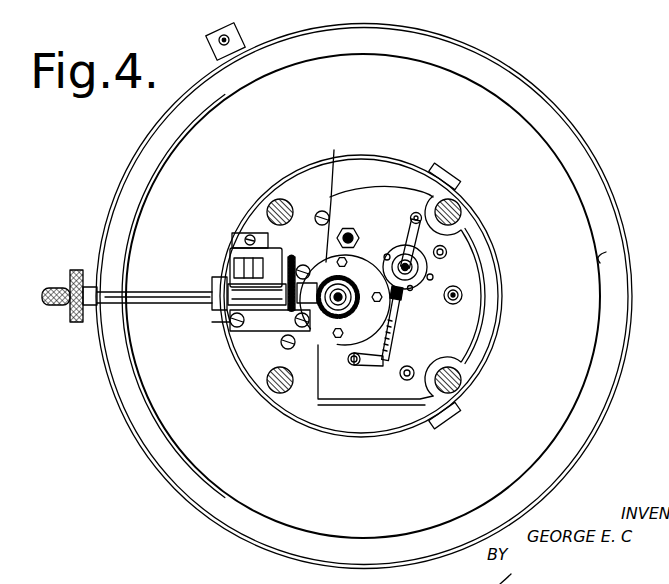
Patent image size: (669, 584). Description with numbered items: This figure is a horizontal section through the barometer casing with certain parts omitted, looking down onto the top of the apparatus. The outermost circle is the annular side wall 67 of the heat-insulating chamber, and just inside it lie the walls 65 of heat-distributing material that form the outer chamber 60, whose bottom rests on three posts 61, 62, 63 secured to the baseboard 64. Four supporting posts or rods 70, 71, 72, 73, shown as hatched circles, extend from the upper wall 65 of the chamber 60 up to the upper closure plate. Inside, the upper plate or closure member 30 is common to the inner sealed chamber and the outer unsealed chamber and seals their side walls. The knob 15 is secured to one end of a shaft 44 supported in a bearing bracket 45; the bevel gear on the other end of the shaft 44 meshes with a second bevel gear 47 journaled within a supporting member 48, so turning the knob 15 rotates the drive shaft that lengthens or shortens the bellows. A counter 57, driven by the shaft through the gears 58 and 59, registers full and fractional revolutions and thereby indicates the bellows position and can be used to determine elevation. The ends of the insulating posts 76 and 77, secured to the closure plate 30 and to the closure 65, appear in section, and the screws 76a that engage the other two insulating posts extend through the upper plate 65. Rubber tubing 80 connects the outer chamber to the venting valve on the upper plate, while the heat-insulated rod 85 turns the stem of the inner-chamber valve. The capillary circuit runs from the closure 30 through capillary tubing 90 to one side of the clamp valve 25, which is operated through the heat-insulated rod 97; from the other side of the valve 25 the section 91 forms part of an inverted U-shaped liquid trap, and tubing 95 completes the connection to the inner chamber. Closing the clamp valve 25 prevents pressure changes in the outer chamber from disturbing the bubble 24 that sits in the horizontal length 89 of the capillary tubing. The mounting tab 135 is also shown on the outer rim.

The knob 15 is at (48, 306).
The bubble 24 is at (396, 341).
The clamp valve 25 is at (440, 259).
The upper plate or closure member 30 is at (344, 197).
The shaft 44 is at (164, 304).
The bearing bracket 45 is at (225, 322).
The bevel gear 47 is at (343, 287).
The supporting member 48 is at (249, 332).
The counter 57 is at (232, 256).
The gear 58 is at (254, 328).
The gear 59 is at (299, 263).
The outer chamber 60 is at (482, 329).
The post 61 is at (212, 310).
The post 62 is at (437, 163).
The post 63 is at (433, 437).
The baseboard 64 is at (606, 256).
The heat-distributing walls 65 is at (311, 178).
The annular side wall 67 is at (629, 352).
The supporting post or rod 70 is at (270, 203).
The supporting post or rod 71 is at (460, 214).
The supporting post or rod 72 is at (459, 389).
The supporting post or rod 73 is at (276, 396).
The post of insulating material 76 is at (405, 382).
The screws 76a is at (323, 211).
The post of insulating material 77 is at (468, 250).
The rubber tubing 80 is at (462, 295).
The heat-insulated rod 85 is at (349, 230).
The horizontal length of capillary tubing 89 is at (389, 356).
The capillary tubing 90 is at (417, 212).
The section of capillary tubing 91 is at (409, 293).
The tubing 95 is at (362, 364).
The heat-insulated rod 97 is at (409, 228).
The mounting tab 135 is at (233, 47).